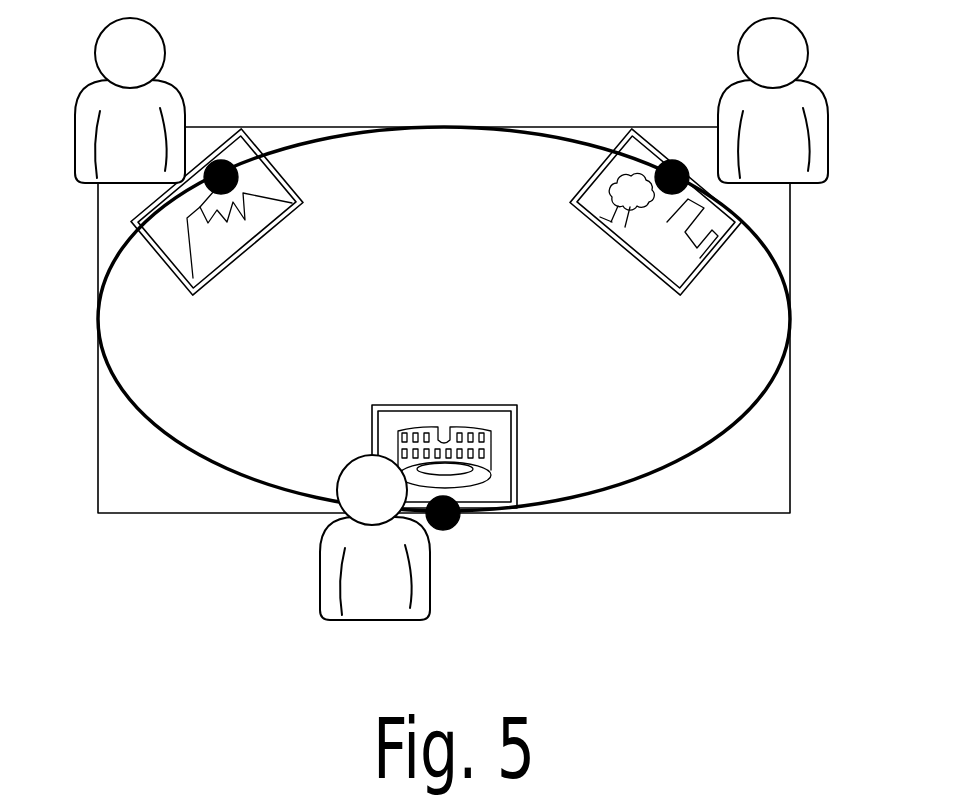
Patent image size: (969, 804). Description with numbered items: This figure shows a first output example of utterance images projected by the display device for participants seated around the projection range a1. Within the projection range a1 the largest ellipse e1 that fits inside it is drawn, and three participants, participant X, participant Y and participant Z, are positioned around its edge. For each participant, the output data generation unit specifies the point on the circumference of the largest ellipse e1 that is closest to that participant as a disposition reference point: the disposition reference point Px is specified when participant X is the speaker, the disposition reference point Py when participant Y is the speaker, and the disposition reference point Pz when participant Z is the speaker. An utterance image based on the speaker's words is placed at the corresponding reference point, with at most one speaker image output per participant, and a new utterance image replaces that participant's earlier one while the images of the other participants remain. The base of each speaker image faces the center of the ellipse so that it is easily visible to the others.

The participant X is at (85, 102).
The participant Y is at (817, 102).
The participant Z is at (320, 568).
The disposition reference point Px is at (222, 162).
The disposition reference point Py is at (668, 162).
The disposition reference point Pz is at (453, 527).
The largest ellipse e1 is at (747, 413).
The projection range a1 is at (790, 480).